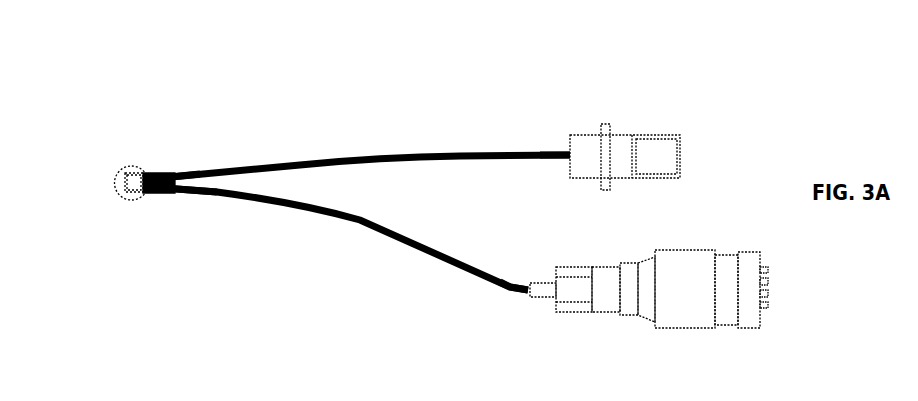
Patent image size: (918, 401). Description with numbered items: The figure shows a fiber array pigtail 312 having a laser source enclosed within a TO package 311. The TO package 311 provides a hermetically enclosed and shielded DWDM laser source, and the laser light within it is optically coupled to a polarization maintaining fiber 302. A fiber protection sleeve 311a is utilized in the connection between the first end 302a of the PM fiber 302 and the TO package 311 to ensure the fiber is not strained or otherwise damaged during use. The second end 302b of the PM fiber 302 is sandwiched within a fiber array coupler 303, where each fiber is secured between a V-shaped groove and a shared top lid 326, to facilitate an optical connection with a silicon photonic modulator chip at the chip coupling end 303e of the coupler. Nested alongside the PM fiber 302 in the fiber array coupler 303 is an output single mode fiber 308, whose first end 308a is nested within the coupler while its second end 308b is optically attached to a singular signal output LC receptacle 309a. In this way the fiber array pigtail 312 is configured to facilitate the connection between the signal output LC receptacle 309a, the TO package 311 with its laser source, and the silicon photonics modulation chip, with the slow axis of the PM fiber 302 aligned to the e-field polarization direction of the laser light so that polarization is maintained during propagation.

The fiber array pigtail 312 is at (352, 105).
The fiber array coupler 303 is at (145, 175).
The chip coupling end 303e is at (125, 183).
The output single mode fiber 308 is at (462, 153).
The first end of the output SMF 308a is at (172, 170).
The second end of the output SMF 308b is at (564, 138).
The signal output LC receptacle 309a is at (665, 137).
The polarization maintaining fiber 302 is at (398, 233).
The first end of the PMF 302a is at (510, 292).
The second end of the PMF 302b is at (170, 197).
The TO package 311 is at (678, 328).
The fiber protection sleeve 311a is at (547, 290).
The top lid 326 is at (41, 394).